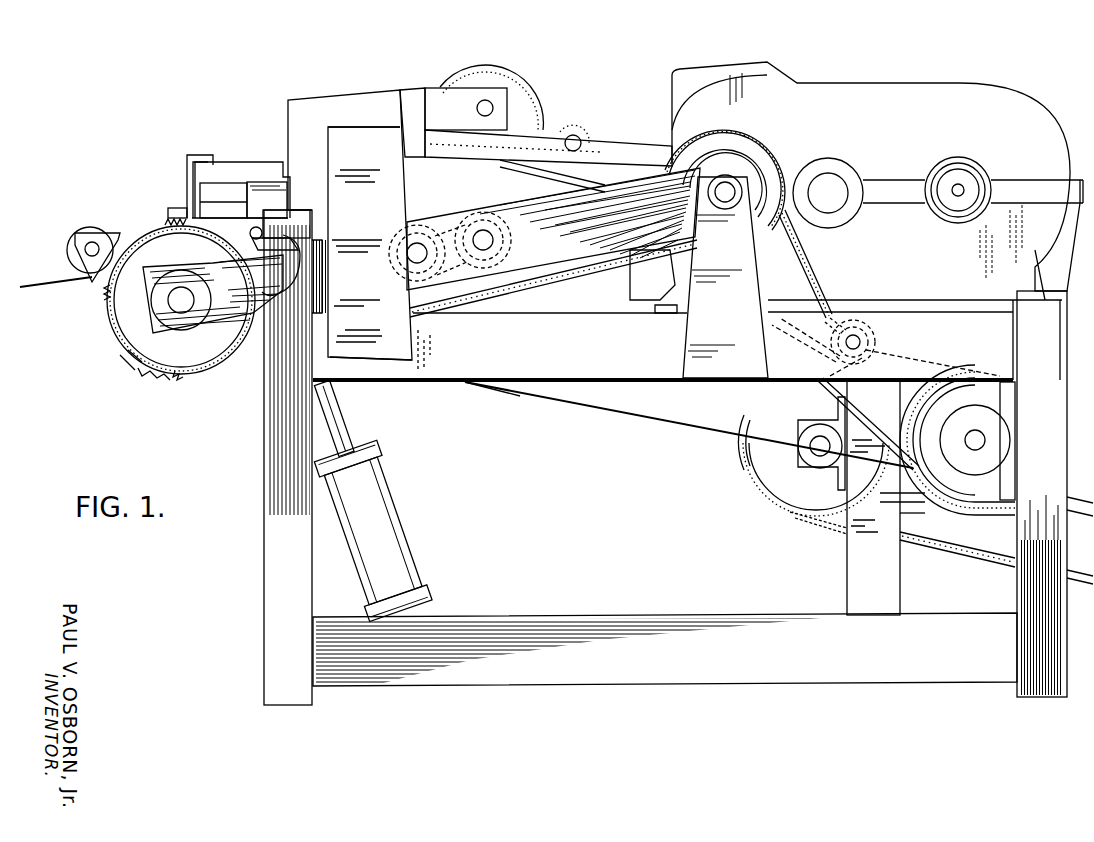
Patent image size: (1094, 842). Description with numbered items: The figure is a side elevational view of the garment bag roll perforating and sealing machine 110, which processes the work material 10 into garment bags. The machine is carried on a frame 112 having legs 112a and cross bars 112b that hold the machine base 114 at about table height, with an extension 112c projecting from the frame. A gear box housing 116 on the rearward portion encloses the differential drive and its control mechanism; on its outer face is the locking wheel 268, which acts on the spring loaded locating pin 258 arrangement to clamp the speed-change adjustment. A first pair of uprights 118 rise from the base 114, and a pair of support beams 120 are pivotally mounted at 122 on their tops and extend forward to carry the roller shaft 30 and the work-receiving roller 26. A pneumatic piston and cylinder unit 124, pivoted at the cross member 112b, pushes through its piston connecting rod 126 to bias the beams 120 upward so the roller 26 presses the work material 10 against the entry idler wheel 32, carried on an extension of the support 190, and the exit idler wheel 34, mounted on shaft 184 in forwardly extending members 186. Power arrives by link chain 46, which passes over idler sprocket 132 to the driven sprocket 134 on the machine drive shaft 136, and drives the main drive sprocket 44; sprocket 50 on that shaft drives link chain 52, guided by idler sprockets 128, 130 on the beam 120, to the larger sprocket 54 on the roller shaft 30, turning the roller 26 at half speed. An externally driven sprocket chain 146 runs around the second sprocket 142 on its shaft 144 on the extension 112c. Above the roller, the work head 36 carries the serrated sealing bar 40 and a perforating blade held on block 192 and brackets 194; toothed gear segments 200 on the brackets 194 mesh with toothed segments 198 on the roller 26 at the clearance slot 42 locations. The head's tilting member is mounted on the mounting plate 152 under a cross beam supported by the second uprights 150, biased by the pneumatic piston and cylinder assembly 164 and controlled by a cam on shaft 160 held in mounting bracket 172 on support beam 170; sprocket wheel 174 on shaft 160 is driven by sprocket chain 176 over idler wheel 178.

The work material 10 is at (625, 418).
The work-receiving roller 26 is at (100, 327).
The roller shaft 30 is at (182, 307).
The idler wheel 32 is at (272, 213).
The idler wheel 34 is at (78, 246).
The work head 36 is at (184, 178).
The serrated sealing bar 40 is at (225, 200).
The clearance slot 42 is at (146, 378).
The main drive sprocket 44 is at (746, 140).
The link chain 46 is at (810, 282).
The sprocket 50 is at (736, 170).
The link chain 52 is at (594, 262).
The sprocket 54 is at (138, 366).
The garment bag roll perforating and sealing machine 110 is at (556, 379).
The frame 112 is at (613, 474).
The legs 112a is at (268, 633).
The cross bars 112b is at (650, 683).
The extension 112c is at (848, 580).
The machine base 114 is at (622, 382).
The gear box housing 116 is at (985, 90).
The uprights 118 is at (706, 380).
The support beams 120 is at (562, 250).
The pivot 122 is at (725, 202).
The pneumatic piston and cylinder unit 124 is at (410, 540).
The piston connecting rod 126 is at (358, 438).
The guiding idler sprocket 128 is at (408, 252).
The guiding idler sprocket 130 is at (483, 215).
The idler sprocket 132 is at (862, 342).
The driven sprocket 134 is at (973, 392).
The machine drive shaft 136 is at (980, 438).
The second sprocket 142 is at (776, 492).
The shaft 144 is at (825, 456).
The sprocket chain 146 is at (947, 530).
The uprights 150 is at (372, 311).
The mounting plate 152 is at (440, 192).
The shaft 160 is at (490, 105).
The pneumatic piston and cylinder assembly 164 is at (492, 313).
The support beam 170 is at (488, 57).
The mounting bracket 172 is at (420, 88).
The sprocket wheel 174 is at (503, 92).
The sprocket chain 176 is at (612, 150).
The idler wheel 178 is at (576, 135).
The shaft 184 is at (88, 250).
The forwardly extending members 186 is at (88, 228).
The support 190 is at (325, 100).
The block 192 is at (198, 152).
The brackets 194 is at (233, 162).
The toothed segments 198 is at (165, 222).
The toothed gear segments 200 is at (170, 210).
The spring loaded locating pin 258 is at (962, 186).
The locking wheel 268 is at (944, 170).